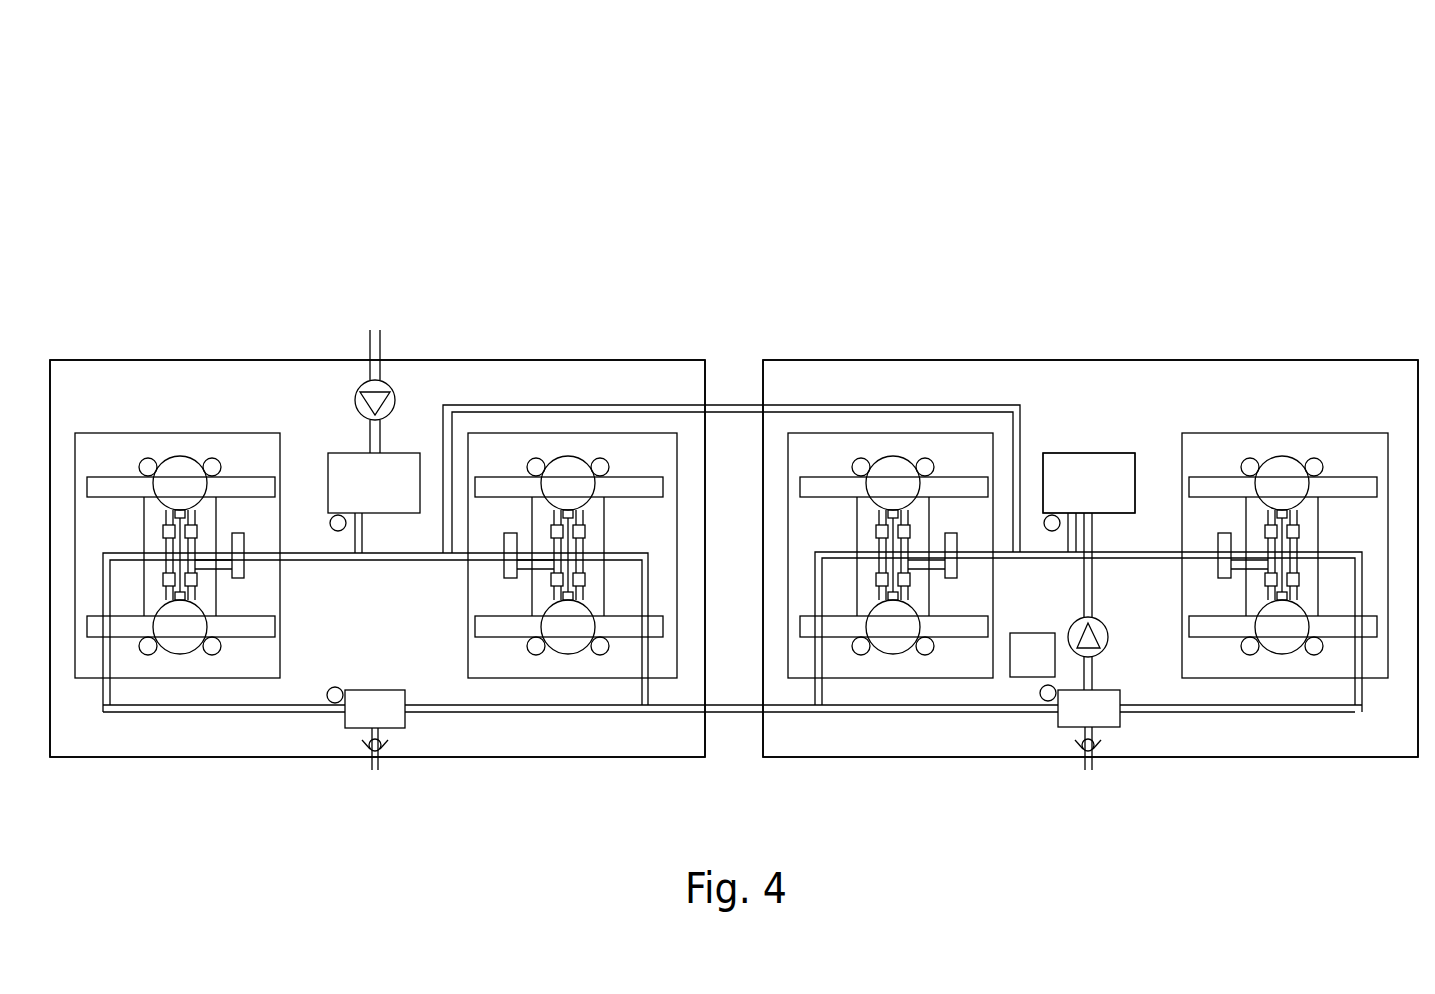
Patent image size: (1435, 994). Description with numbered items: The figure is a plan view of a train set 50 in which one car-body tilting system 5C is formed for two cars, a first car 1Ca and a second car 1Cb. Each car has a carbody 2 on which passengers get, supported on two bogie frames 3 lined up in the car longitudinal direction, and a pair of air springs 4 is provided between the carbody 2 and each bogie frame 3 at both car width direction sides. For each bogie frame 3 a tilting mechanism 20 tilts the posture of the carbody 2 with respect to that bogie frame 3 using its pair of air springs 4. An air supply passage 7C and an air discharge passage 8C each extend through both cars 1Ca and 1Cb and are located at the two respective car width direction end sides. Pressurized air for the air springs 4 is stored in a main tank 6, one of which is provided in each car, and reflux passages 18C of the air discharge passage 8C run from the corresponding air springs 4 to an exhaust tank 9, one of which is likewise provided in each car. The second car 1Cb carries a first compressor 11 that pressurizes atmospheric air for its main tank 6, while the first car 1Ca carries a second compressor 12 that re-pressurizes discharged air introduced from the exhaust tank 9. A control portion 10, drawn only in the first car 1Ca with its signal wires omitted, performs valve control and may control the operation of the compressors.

The train set 50 is at (734, 173).
The first car 1Ca is at (990, 302).
The second car 1Cb is at (481, 302).
The carbody 2 is at (163, 358).
The tilting mechanism 20 is at (277, 650).
The bogie frame 3 is at (100, 480).
The air spring 4 is at (175, 458).
The reflux passage 18C is at (240, 713).
The air discharge passage 8C is at (558, 716).
The air supply passage 7C is at (570, 405).
The first compressor 11 is at (355, 402).
The main tank 6 is at (328, 488).
The car-body tilting system 5C is at (1047, 432).
The second compressor 12 is at (1105, 620).
The exhaust tank 9 is at (398, 728).
The control portion 10 is at (1044, 669).